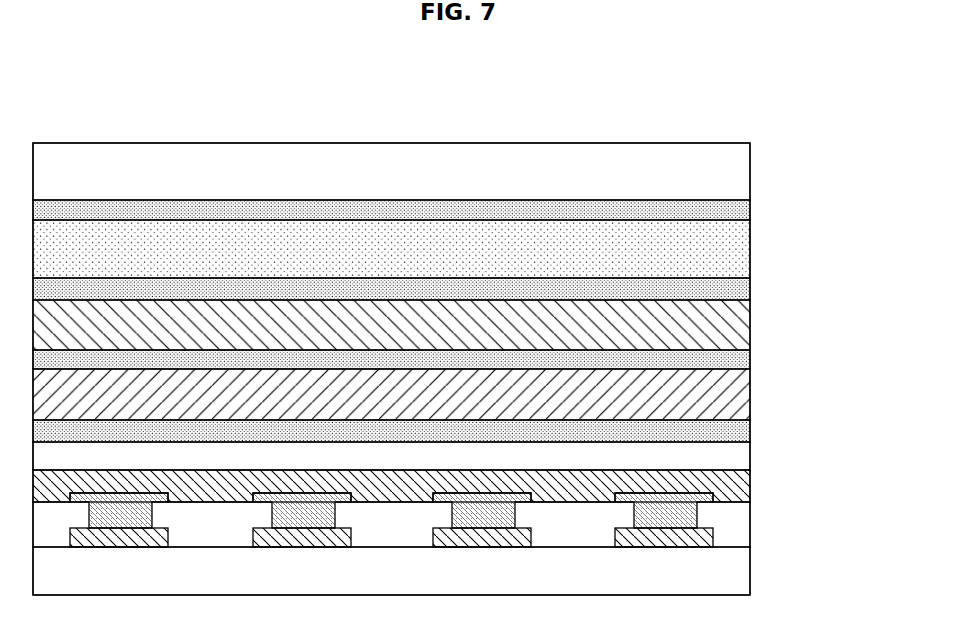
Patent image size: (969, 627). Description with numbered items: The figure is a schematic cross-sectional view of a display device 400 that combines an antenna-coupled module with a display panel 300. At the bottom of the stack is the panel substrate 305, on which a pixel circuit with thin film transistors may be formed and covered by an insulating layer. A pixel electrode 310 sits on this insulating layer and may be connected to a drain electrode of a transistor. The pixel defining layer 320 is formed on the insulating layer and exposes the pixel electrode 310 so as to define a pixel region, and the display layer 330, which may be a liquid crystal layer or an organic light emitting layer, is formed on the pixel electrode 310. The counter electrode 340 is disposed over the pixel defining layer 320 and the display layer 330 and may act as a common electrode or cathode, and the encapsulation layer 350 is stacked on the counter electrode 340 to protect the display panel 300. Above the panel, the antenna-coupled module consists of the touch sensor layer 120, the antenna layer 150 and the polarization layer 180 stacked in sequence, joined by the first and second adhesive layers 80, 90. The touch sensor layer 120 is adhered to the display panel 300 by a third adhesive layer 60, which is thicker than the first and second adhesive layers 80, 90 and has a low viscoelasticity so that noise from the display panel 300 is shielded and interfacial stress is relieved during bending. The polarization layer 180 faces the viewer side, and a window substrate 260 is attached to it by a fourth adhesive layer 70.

The display device 400 is at (82, 67).
The window substrate 260 is at (745, 168).
The fourth adhesive layer 70 is at (748, 211).
The polarization layer 180 is at (748, 250).
The second adhesive layer 90 is at (748, 288).
The antenna layer 150 is at (743, 318).
The first adhesive layer 80 is at (743, 360).
The touch sensor layer 120 is at (740, 398).
The third adhesive layer 60 is at (752, 430).
The display panel 300 is at (475, 507).
The encapsulation layer 350 is at (745, 457).
The counter electrode 340 is at (750, 485).
The display layer 330 is at (677, 497).
The pixel defining layer 320 is at (745, 512).
The pixel electrode 310 is at (710, 536).
The panel substrate 305 is at (439, 571).